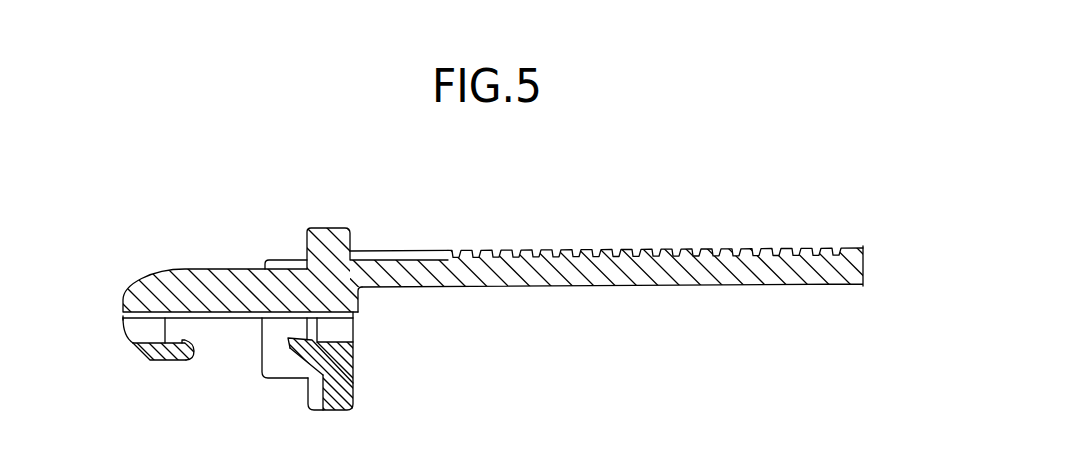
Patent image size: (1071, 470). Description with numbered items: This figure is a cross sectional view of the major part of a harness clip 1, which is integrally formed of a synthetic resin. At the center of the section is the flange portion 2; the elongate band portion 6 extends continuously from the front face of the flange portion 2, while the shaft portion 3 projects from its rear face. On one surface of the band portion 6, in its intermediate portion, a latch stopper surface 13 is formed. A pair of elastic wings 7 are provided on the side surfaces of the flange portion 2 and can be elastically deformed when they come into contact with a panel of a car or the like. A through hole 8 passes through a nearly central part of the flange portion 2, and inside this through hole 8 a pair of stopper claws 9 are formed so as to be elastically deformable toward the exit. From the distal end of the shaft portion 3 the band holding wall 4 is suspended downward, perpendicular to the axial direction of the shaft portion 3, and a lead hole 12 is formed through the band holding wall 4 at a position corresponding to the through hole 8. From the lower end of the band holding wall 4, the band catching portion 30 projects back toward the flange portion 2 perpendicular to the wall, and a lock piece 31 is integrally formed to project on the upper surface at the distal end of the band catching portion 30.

The harness clip 1 is at (563, 175).
The flange portion 2 is at (332, 233).
The shaft portion 3 is at (210, 270).
The band holding wall 4 is at (151, 360).
The band portion 6 is at (780, 248).
The elastic wings 7 is at (281, 380).
The through hole 8 is at (342, 342).
The stopper claws 9 is at (340, 338).
The lead hole 12 is at (134, 342).
The latch stopper surface 13 is at (652, 249).
The band catching portion 30 is at (172, 360).
The lock piece 31 is at (194, 343).